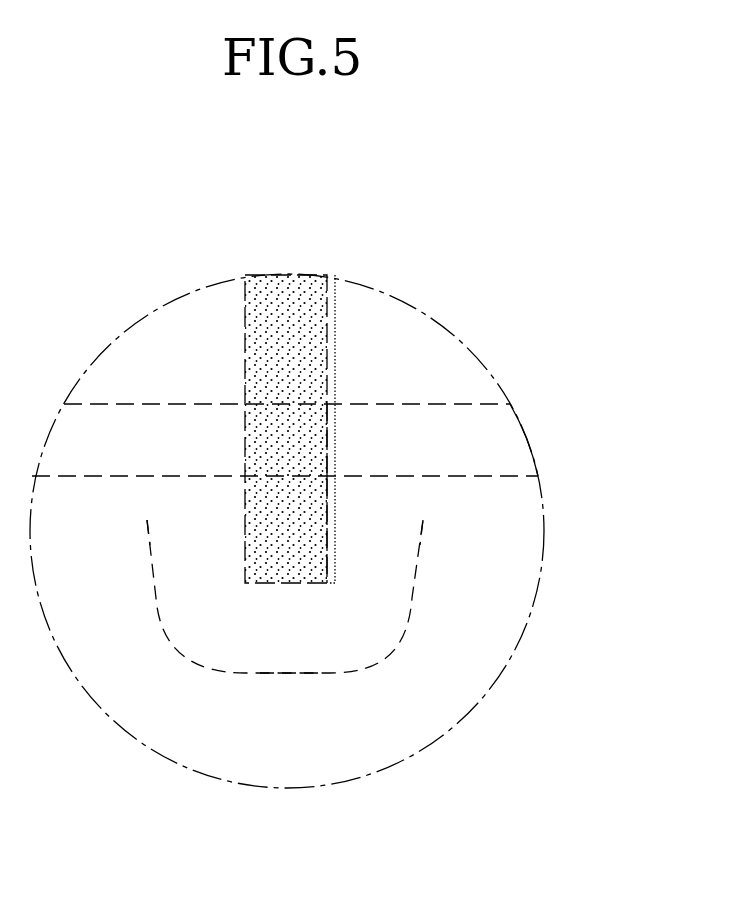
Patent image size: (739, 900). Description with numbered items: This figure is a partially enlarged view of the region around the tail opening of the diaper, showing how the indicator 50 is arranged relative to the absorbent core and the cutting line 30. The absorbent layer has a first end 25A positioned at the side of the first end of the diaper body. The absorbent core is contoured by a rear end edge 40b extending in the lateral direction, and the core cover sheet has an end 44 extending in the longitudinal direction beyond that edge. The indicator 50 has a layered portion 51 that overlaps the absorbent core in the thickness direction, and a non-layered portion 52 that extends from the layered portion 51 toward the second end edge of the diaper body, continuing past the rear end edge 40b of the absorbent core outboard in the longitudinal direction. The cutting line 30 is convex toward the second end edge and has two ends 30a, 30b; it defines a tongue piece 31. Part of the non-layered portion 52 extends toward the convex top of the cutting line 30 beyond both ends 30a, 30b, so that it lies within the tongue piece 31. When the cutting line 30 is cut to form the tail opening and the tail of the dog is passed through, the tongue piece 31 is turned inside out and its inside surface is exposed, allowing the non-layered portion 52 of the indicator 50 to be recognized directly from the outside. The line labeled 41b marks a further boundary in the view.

The first end 25A is at (128, 372).
The cutting line 30 is at (250, 672).
The end of cutting line 30a is at (149, 527).
The end of cutting line 30b is at (421, 518).
The tongue piece 31 is at (297, 648).
The rear end edge 40b is at (470, 403).
The lower boundary line 41b is at (498, 477).
The end of core cover sheet 44 is at (505, 440).
The indicator 50 is at (375, 537).
The layered portion 51 is at (335, 431).
The non-layered portion 52 is at (335, 521).